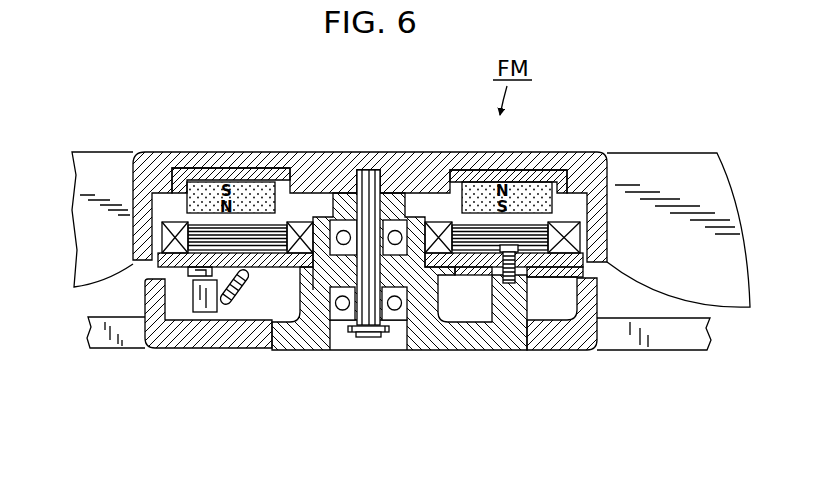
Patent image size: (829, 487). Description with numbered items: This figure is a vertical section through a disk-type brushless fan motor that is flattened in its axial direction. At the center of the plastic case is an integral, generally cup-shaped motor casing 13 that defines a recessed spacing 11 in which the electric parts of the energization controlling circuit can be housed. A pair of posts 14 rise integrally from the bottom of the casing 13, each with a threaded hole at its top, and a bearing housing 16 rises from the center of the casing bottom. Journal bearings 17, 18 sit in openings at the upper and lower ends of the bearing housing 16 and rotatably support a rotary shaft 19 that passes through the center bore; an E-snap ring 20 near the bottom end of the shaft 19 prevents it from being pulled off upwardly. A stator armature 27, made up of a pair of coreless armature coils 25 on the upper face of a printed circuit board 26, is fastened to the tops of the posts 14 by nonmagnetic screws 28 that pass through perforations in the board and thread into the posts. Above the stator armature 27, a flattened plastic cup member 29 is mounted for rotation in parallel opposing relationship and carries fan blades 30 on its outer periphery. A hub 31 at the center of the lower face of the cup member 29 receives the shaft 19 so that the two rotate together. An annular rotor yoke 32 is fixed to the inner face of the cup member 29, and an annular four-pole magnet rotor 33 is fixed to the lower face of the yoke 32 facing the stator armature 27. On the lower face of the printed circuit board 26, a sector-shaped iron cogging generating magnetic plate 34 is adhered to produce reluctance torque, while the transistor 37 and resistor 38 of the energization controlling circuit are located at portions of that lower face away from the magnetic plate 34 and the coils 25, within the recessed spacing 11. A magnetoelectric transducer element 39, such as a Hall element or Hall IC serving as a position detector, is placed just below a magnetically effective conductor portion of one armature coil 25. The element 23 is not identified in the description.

The recessed spacing 11 is at (453, 340).
The motor casing 13 is at (610, 343).
The posts 14 is at (497, 290).
The bearing housing 16 is at (305, 297).
The journal bearing 17 is at (335, 195).
The journal bearing 18 is at (334, 322).
The rotary shaft 19 is at (370, 172).
The E-snap ring 20 is at (353, 337).
The bottom plate 23 is at (130, 337).
The armature coils 25 is at (572, 238).
The printed circuit board 26 is at (503, 252).
The stator armature 27 is at (545, 187).
The screws 28 is at (528, 335).
The cup member 29 is at (513, 150).
The fan blades 30 is at (667, 165).
The hub 31 is at (396, 210).
The rotor yoke 32 is at (463, 175).
The magnet rotor 33 is at (540, 168).
The cogging generating magnetic plate 34 is at (585, 272).
The transistor 37 is at (200, 312).
The resistor 38 is at (242, 307).
The magnetoelectric transducer element 39 is at (190, 280).